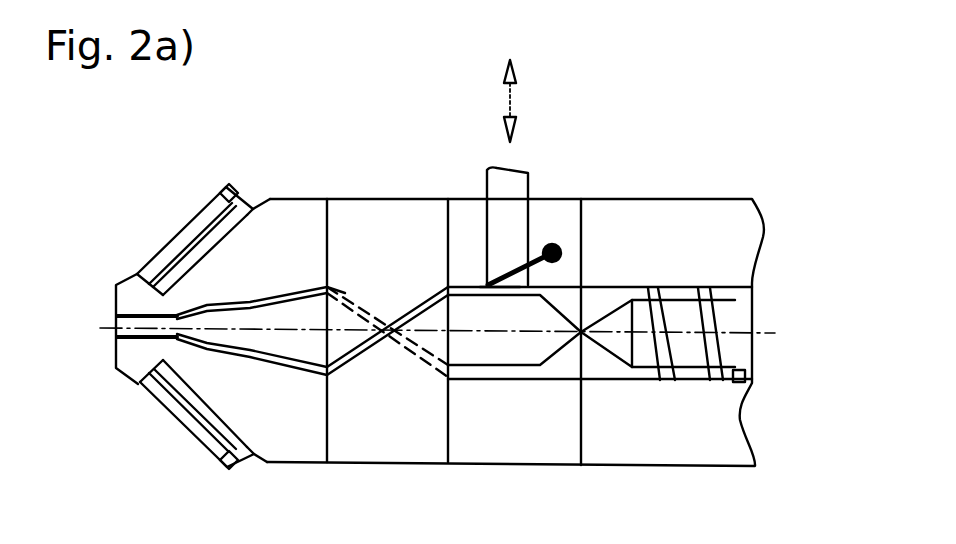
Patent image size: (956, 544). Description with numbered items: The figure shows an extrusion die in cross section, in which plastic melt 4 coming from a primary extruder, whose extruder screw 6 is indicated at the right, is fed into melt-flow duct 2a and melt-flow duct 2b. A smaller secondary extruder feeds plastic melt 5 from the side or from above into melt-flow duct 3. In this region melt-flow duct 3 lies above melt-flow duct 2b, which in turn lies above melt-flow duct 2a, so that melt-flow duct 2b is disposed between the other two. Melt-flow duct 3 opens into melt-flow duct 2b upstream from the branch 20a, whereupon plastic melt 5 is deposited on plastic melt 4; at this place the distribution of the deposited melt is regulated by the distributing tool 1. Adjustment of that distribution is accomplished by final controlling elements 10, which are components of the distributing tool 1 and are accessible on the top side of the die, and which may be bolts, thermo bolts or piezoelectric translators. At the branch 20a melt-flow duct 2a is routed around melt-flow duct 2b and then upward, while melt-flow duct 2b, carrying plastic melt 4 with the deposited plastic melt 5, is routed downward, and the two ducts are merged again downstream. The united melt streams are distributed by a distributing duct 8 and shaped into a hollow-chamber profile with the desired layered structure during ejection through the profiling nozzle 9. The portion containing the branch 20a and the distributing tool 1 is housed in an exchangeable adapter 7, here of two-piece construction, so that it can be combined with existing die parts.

The distributing tool 1 is at (513, 187).
The melt-flow duct 2a is at (497, 377).
The melt-flow duct 2b is at (478, 280).
The melt-flow duct 3 is at (490, 283).
The plastic melt 4 is at (598, 300).
The plastic melt 5 is at (556, 244).
The extruder screw 6 is at (737, 319).
The exchangeable adapter 7 is at (503, 432).
The distributing duct 8 is at (267, 353).
The profiling nozzle 9 is at (267, 230).
The final controlling element 10 is at (197, 237).
The branch 20a is at (338, 293).